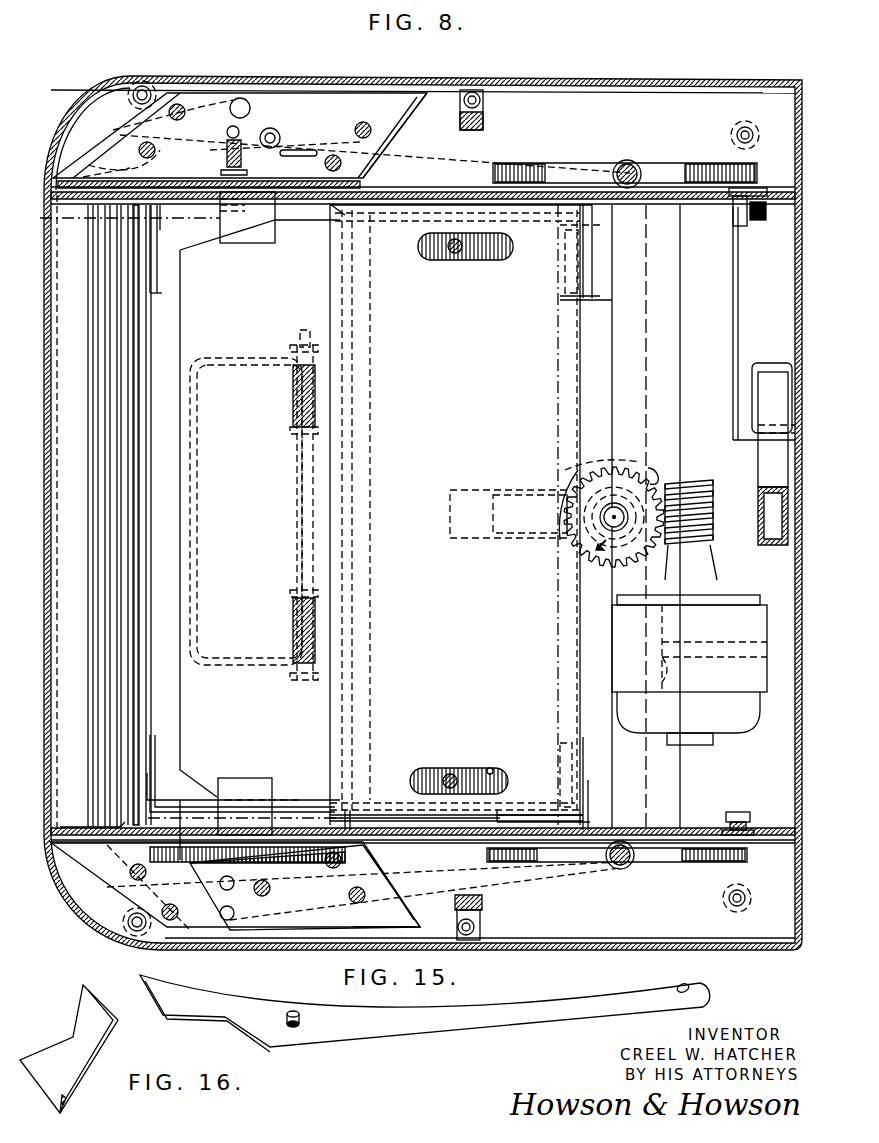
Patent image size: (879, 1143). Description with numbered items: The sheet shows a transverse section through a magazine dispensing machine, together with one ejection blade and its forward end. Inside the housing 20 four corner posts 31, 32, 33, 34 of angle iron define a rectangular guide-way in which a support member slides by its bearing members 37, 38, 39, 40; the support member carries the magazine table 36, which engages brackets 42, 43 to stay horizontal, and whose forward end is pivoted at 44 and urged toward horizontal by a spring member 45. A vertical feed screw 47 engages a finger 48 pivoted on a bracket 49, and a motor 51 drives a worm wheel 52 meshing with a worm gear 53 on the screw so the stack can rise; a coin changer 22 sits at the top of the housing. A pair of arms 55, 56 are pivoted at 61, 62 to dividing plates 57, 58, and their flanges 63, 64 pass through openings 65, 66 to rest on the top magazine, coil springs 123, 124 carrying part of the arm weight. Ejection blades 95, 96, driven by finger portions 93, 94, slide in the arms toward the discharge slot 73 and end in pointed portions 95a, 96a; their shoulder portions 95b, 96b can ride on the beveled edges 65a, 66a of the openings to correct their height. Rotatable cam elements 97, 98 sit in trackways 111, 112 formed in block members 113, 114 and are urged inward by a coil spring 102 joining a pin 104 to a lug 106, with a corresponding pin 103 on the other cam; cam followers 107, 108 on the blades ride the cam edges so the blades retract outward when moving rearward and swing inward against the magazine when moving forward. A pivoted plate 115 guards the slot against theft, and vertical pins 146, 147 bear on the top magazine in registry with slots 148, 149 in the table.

In FIG. 8, the housing 20 is at (797, 928).
In FIG. 8, the coin changer 22 is at (733, 308).
In FIG. 8, the corner post 31 is at (150, 800).
In FIG. 8, the corner post 32 is at (153, 238).
In FIG. 8, the corner post 33 is at (593, 240).
In FIG. 8, the corner post 34 is at (590, 793).
In FIG. 8, the magazine table 36 is at (466, 397).
In FIG. 8, the bearing member 37 is at (157, 762).
In FIG. 8, the bearing member 38 is at (158, 288).
In FIG. 8, the bearing member 39 is at (593, 295).
In FIG. 8, the bearing member 40 is at (583, 743).
In FIG. 8, the bracket 42 is at (563, 278).
In FIG. 8, the bracket 43 is at (557, 757).
In FIG. 8, the pivot 44 is at (340, 818).
In FIG. 8, the spring member 45 is at (197, 613).
In FIG. 8, the feed screw 47 is at (620, 477).
In FIG. 8, the finger 48 is at (587, 493).
In FIG. 8, the bracket 49 is at (473, 490).
In FIG. 8, the motor 51 is at (748, 610).
In FIG. 8, the worm wheel 52 is at (712, 513).
In FIG. 8, the worm gear 53 is at (648, 467).
In FIG. 8, the arm 55 is at (577, 935).
In FIG. 8, the arm 56 is at (557, 92).
In FIG. 8, the dividing plate 57 is at (686, 830).
In FIG. 8, the dividing plate 58 is at (728, 207).
In FIG. 8, the pivot 61 is at (753, 827).
In FIG. 8, the pivot 62 is at (758, 218).
In FIG. 8, the flange 63 is at (243, 783).
In FIG. 8, the flange 64 is at (270, 240).
In FIG. 8, the opening 65 is at (350, 830).
In FIG. 8, the beveled forward edge portion 65a is at (117, 827).
In FIG. 8, the opening 66 is at (333, 207).
In FIG. 8, the beveled forward edge portion 66a is at (160, 212).
In FIG. 8, the slot 73 is at (52, 198).
In FIG. 8, the finger portion 93 is at (620, 868).
In FIG. 8, the finger portion 94 is at (627, 163).
In FIG. 8, the ejection blade 95 is at (587, 852).
In FIG. 15, the ejection blade 95 is at (413, 1020).
In FIG. 8, the pointed end portion 95a is at (97, 848).
In FIG. 15, the pointed end portion 95a is at (142, 977).
In FIG. 8, the shoulder portion 95b is at (150, 943).
In FIG. 15, the shoulder portion 95b is at (227, 1027).
In FIG. 8, the ejection blade 96 is at (567, 178).
In FIG. 16, the ejection blade 96 is at (83, 985).
In FIG. 16, the pointed end portion 96a is at (63, 1112).
In FIG. 8, the shoulder portion 96b is at (150, 108).
In FIG. 16, the shoulder portion 96b is at (73, 1032).
In FIG. 8, the cam element 97 is at (313, 910).
In FIG. 8, the cam element 98 is at (283, 110).
In FIG. 8, the coil spring 102 is at (213, 150).
In FIG. 8, the pin 103 is at (233, 873).
In FIG. 8, the pin 104 is at (240, 98).
In FIG. 8, the lug 106 is at (243, 160).
In FIG. 8, the cam follower 107 is at (228, 920).
In FIG. 15, the cam follower 107 is at (295, 1011).
In FIG. 8, the cam follower 108 is at (207, 73).
In FIG. 8, the trackway 111 is at (180, 847).
In FIG. 8, the trackway 112 is at (147, 158).
In FIG. 8, the block member 113 is at (407, 920).
In FIG. 8, the block member 114 is at (415, 112).
In FIG. 8, the plate 115 is at (120, 700).
In FIG. 8, the coil spring 123 is at (470, 897).
In FIG. 8, the coil spring 124 is at (492, 125).
In FIG. 8, the vertical pin 146 is at (452, 778).
In FIG. 8, the vertical pin 147 is at (457, 247).
In FIG. 8, the slot 148 is at (492, 770).
In FIG. 8, the slot 149 is at (430, 252).